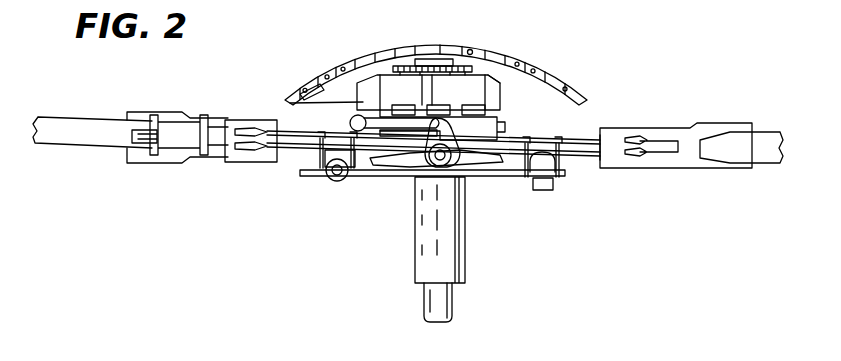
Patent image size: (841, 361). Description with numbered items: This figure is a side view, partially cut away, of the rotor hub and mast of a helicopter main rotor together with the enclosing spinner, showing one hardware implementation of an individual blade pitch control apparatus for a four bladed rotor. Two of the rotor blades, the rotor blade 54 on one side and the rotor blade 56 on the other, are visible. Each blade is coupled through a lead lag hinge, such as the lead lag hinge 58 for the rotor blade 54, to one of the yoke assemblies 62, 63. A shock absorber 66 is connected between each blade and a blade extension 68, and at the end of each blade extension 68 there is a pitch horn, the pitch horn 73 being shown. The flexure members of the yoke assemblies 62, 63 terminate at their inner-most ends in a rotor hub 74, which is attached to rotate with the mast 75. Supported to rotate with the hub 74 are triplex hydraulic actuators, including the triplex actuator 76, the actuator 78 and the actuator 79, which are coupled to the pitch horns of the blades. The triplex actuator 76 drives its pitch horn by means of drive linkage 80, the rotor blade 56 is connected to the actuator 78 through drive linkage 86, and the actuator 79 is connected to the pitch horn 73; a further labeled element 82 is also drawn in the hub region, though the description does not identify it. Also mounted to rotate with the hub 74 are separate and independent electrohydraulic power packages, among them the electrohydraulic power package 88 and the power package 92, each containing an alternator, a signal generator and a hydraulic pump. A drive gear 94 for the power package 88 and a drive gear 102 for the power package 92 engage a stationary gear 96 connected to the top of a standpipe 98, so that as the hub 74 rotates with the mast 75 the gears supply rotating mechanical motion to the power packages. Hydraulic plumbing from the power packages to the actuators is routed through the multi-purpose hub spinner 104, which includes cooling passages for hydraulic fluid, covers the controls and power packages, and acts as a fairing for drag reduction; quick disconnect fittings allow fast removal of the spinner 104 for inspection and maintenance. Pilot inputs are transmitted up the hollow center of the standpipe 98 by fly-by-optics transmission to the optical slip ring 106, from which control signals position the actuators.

The rotor blade 54 is at (82, 122).
The rotor blade 56 is at (768, 165).
The lead lag hinge 58 is at (137, 153).
The yoke assembly 62 is at (588, 140).
The yoke assembly 63 is at (490, 185).
The shock absorber 66 is at (180, 145).
The blade extension 68 is at (190, 113).
The pitch horn 73 is at (462, 183).
The rotor hub 74 is at (393, 186).
The mast 75 is at (415, 263).
The triplex hydraulic actuator 76 is at (332, 184).
The triplex hydraulic actuator 78 is at (557, 185).
The triplex hydraulic actuator 79 is at (497, 110).
The drive linkage 80 is at (300, 170).
The actuating rod 82 is at (358, 103).
The drive linkage 86 is at (563, 160).
The electrohydraulic power package 88 is at (377, 80).
The electrohydraulic power package 92 is at (515, 86).
The drive gear 94 is at (385, 65).
The stationary gear 96 is at (470, 50).
The standpipe 98 is at (455, 300).
The drive gear 102 is at (505, 93).
The hub spinner 104 is at (315, 82).
The optical slip ring 106 is at (434, 58).